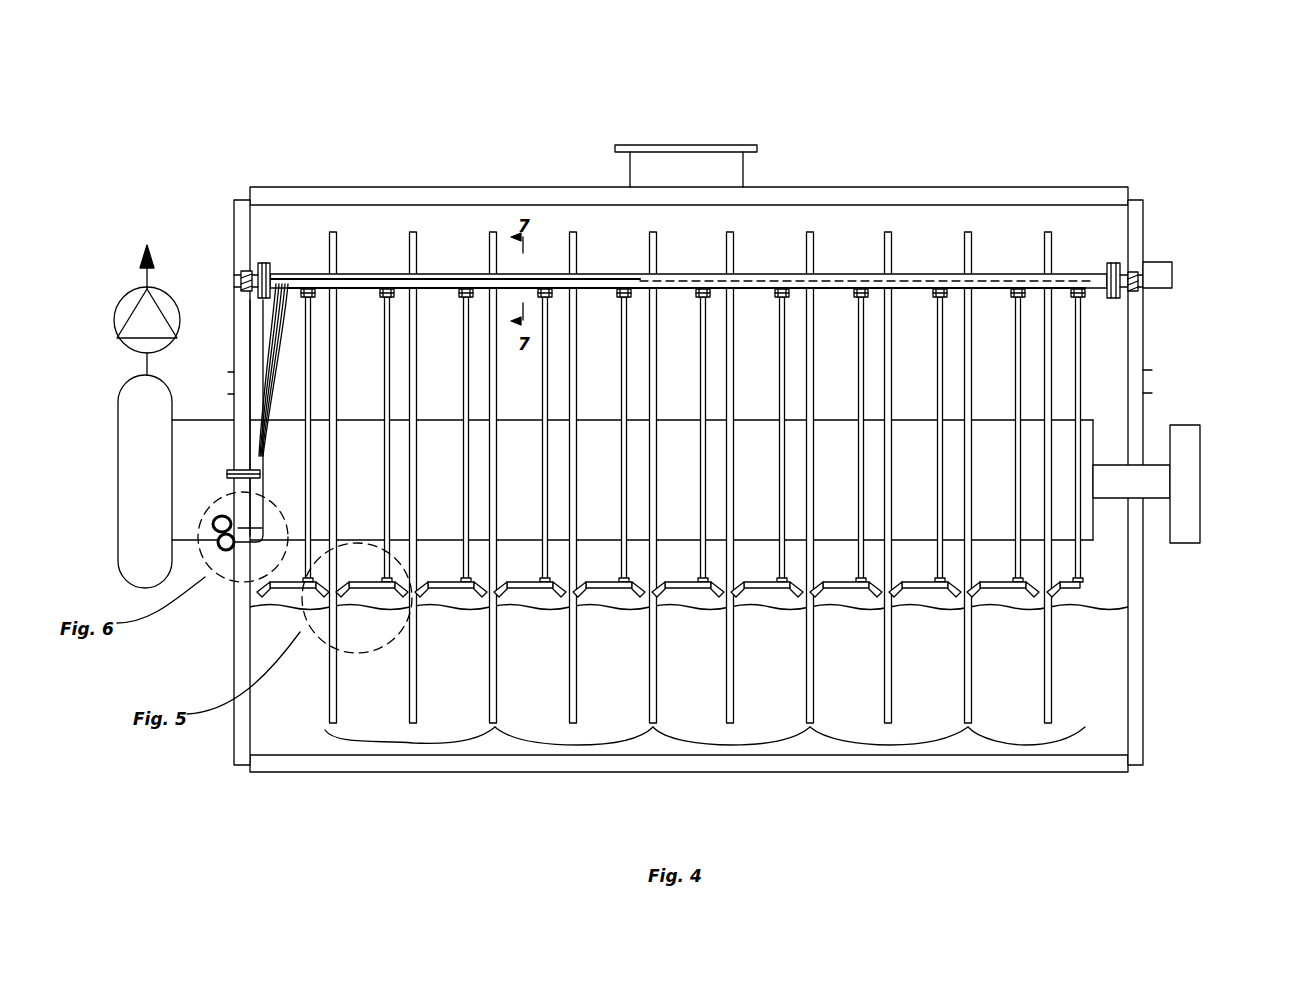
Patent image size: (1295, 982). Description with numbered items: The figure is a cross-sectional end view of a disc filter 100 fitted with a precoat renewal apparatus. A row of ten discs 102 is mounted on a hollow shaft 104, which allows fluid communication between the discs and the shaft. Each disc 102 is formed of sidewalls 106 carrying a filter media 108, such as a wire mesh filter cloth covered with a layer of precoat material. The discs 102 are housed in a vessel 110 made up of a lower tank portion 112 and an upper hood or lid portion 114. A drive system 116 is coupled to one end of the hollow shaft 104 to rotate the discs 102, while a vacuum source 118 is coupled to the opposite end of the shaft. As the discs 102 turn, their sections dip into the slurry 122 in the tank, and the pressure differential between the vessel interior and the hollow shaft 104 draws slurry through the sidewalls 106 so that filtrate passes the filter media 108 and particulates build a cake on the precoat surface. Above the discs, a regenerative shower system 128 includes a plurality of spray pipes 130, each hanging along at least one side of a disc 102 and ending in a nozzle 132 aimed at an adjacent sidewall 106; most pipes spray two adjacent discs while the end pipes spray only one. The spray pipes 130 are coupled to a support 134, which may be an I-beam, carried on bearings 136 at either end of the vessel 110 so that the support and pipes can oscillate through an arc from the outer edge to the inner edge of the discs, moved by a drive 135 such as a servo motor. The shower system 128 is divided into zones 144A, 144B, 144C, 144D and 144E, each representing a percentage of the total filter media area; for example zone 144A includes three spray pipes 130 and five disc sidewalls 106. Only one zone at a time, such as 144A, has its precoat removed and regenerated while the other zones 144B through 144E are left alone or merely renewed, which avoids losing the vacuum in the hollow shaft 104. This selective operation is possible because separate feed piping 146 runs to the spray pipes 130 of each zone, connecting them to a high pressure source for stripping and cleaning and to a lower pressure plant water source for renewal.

The disc filter 100 is at (948, 128).
The discs 102 is at (411, 232).
The hollow shaft 104 is at (1095, 420).
The sidewalls 106 is at (490, 245).
The filter media 108 is at (499, 232).
The vessel 110 is at (263, 195).
The tank portion 112 is at (235, 628).
The hood or lid portion 114 is at (234, 325).
The drive system 116 is at (1195, 425).
The vacuum source 118 is at (112, 312).
The slurry 122 is at (1110, 610).
The regenerative shower system 128 is at (272, 245).
The spray pipes 130 is at (1025, 352).
The nozzle 132 is at (1068, 592).
The support 134 is at (1120, 265).
The drive 135 is at (1172, 272).
The bearings 136 is at (242, 278).
The zone 144A is at (413, 743).
The zone 144B is at (577, 745).
The zone 144C is at (732, 745).
The zone 144D is at (890, 745).
The zone 144E is at (1025, 745).
The feed piping 146 is at (265, 378).